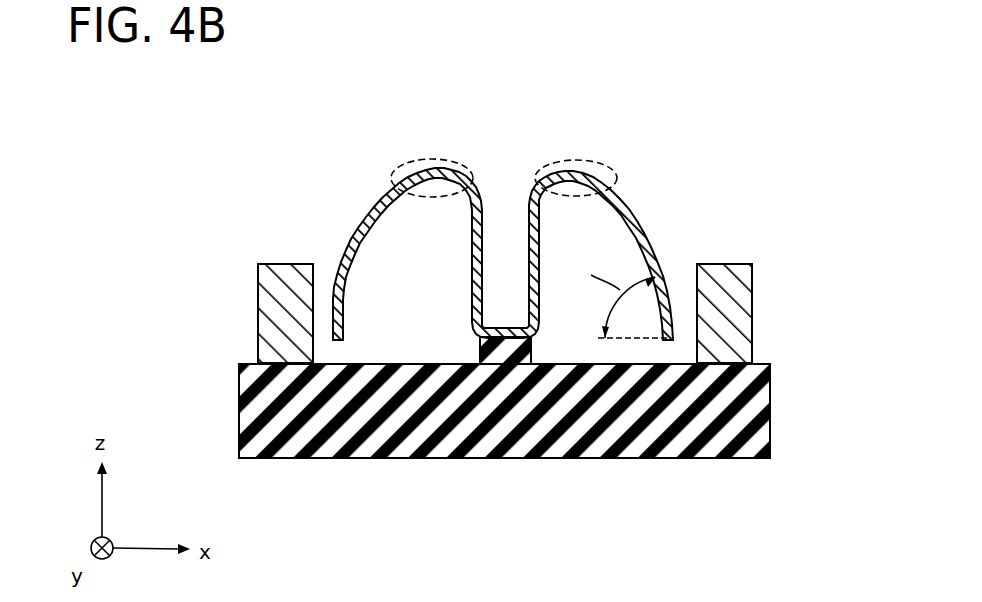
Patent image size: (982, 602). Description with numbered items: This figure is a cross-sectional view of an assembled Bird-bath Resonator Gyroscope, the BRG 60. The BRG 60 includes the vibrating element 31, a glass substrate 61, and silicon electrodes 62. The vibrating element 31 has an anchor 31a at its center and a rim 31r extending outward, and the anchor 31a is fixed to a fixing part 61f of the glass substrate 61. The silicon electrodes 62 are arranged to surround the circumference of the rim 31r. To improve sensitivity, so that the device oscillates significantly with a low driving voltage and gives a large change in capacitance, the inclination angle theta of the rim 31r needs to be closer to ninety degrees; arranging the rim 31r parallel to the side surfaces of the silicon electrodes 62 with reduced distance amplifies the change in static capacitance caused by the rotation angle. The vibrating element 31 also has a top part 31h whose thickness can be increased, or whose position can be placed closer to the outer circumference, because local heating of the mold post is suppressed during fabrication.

The BRG 60 is at (830, 58).
The glass substrate 61 is at (547, 418).
The fixing part 61f is at (495, 353).
The silicon electrodes 62 is at (275, 285).
The vibrating element 31 is at (429, 153).
The anchor 31a is at (492, 330).
The top part 31h is at (407, 165).
The rim 31r is at (670, 282).